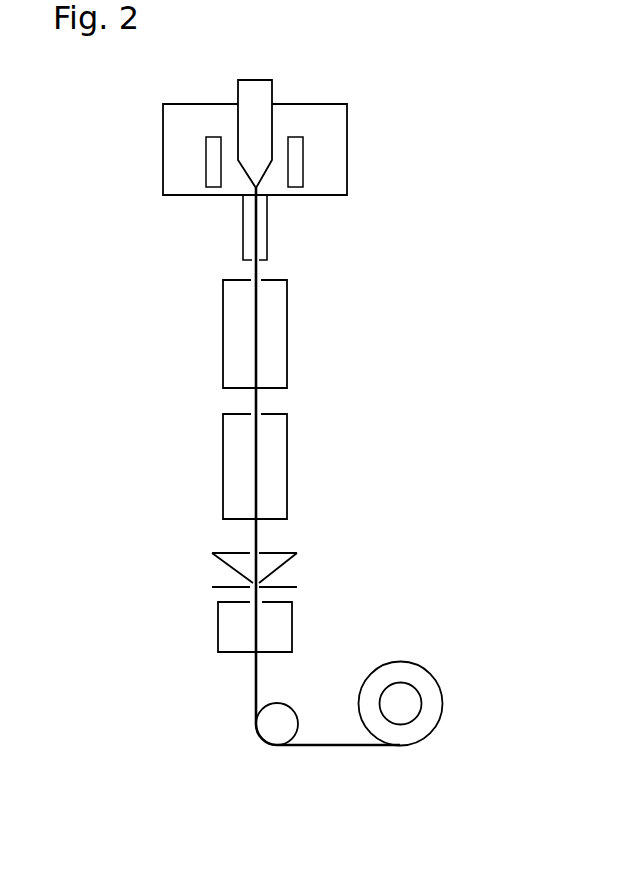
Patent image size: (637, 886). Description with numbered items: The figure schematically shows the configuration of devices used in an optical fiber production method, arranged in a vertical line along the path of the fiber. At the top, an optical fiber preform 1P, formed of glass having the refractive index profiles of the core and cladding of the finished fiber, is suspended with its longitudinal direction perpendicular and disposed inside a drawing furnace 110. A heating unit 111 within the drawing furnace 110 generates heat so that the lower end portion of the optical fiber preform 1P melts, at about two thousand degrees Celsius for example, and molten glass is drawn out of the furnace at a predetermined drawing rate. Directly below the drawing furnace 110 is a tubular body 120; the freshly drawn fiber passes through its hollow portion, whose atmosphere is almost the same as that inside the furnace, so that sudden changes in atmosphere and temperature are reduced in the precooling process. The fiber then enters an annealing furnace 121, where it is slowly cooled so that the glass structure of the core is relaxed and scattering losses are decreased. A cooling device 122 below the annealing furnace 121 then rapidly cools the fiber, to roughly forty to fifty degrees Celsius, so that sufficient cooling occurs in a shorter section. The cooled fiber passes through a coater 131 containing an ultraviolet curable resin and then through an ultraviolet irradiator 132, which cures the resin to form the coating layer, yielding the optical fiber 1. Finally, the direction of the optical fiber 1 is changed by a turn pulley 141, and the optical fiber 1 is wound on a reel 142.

The optical fiber 1 is at (257, 684).
The optical fiber preform 1P is at (257, 137).
The drawing furnace 110 is at (347, 120).
The heating unit 111 is at (297, 163).
The tubular body 120 is at (260, 227).
The annealing furnace 121 is at (265, 323).
The cooling device 122 is at (268, 449).
The coater 131 is at (268, 562).
The ultraviolet irradiator 132 is at (268, 616).
The turn pulley 141 is at (273, 715).
The reel 142 is at (398, 703).